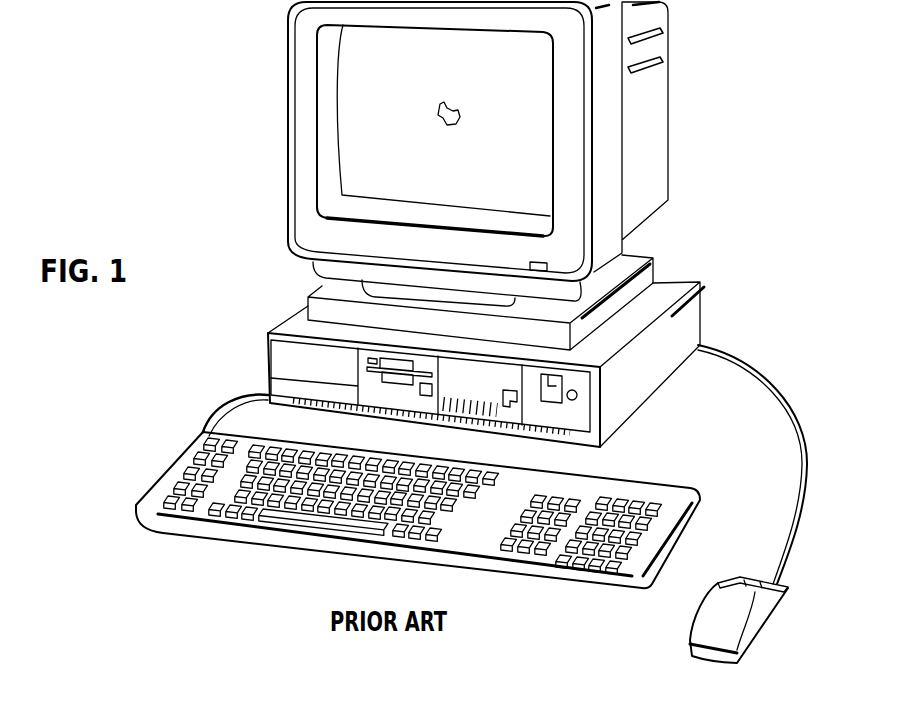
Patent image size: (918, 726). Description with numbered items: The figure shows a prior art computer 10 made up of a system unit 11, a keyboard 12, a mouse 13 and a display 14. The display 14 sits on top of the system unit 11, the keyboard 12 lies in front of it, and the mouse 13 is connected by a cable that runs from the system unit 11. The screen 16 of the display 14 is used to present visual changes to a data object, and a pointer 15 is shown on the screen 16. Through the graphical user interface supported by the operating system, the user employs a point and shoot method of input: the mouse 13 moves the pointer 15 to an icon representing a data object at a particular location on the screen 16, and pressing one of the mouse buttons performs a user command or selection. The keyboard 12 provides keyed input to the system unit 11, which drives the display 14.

The computer 10 is at (227, 194).
The system unit 11 is at (266, 348).
The keyboard 12 is at (162, 534).
The mouse 13 is at (776, 618).
The display 14 is at (288, 118).
The cursor 15 is at (443, 102).
The screen 16 is at (406, 156).